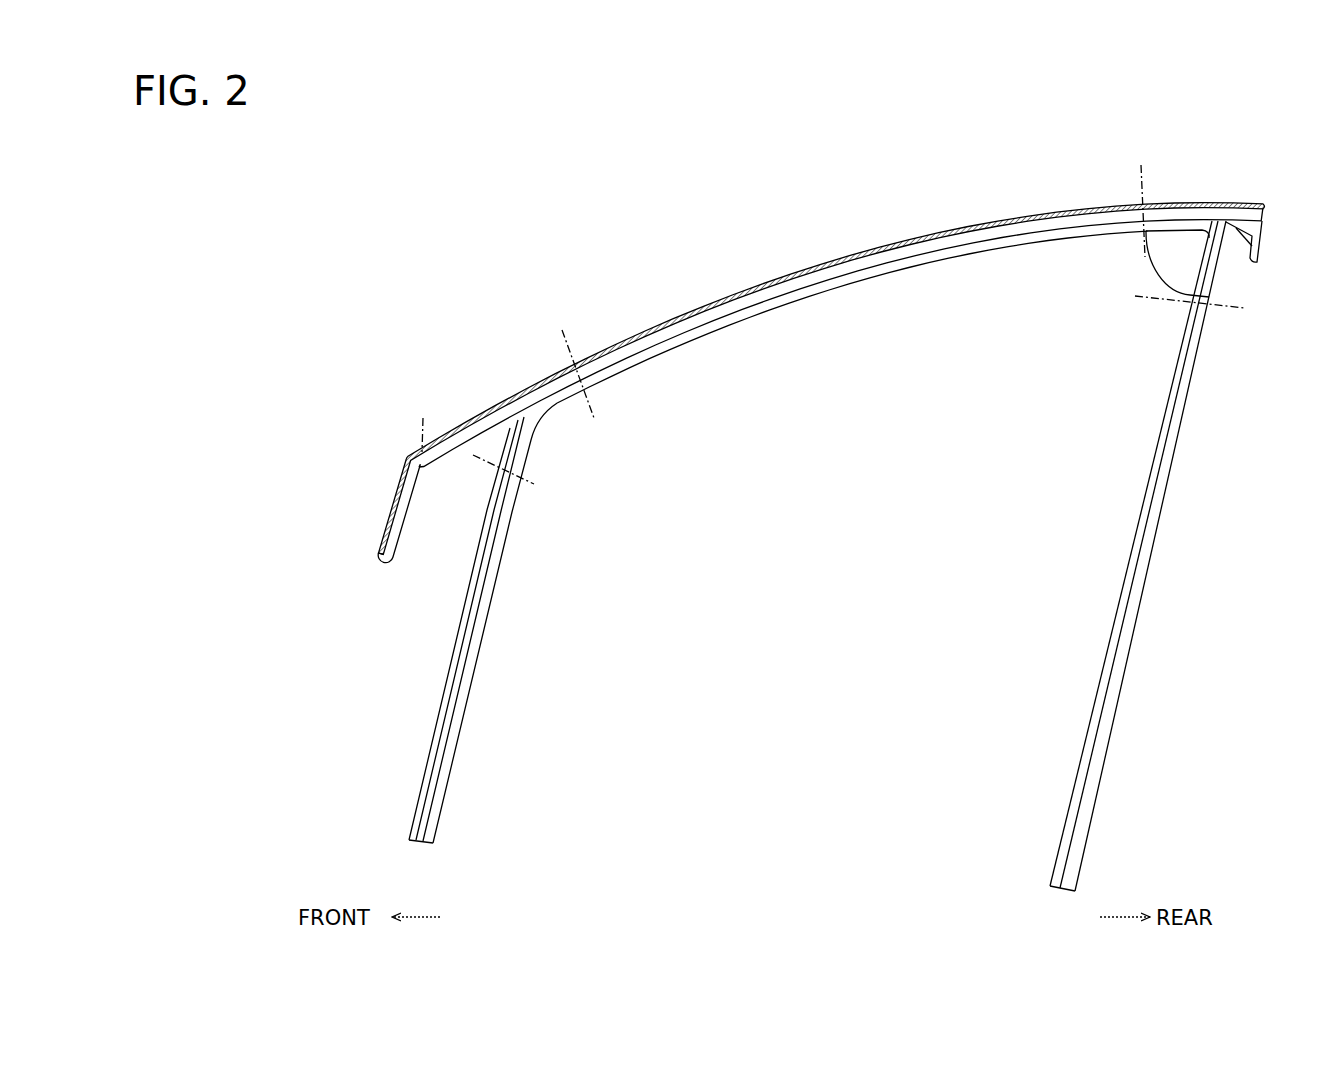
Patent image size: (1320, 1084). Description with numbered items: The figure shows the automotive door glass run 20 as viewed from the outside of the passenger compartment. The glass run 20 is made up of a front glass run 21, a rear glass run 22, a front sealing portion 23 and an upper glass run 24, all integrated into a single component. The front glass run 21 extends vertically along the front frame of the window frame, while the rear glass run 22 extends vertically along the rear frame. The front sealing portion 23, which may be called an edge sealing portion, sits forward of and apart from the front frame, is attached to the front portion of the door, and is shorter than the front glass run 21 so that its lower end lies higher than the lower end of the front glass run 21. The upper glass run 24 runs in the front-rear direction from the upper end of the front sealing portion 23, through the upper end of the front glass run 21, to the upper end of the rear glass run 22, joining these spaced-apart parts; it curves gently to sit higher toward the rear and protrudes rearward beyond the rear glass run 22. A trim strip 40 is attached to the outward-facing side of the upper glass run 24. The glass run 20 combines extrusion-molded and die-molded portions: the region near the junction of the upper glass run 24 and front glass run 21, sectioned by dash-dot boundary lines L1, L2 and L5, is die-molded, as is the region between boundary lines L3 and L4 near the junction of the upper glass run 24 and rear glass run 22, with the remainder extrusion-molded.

The glass run 20 is at (784, 515).
The front glass run 21 is at (481, 686).
The rear glass run 22 is at (1105, 632).
The front sealing portion 23 is at (400, 495).
The upper glass run 24 is at (716, 292).
The trim strip 40 is at (912, 248).
The boundary line L1 is at (562, 326).
The boundary line L2 is at (534, 484).
The boundary line L3 is at (1141, 165).
The boundary line L4 is at (1152, 298).
The boundary line L5 is at (423, 418).